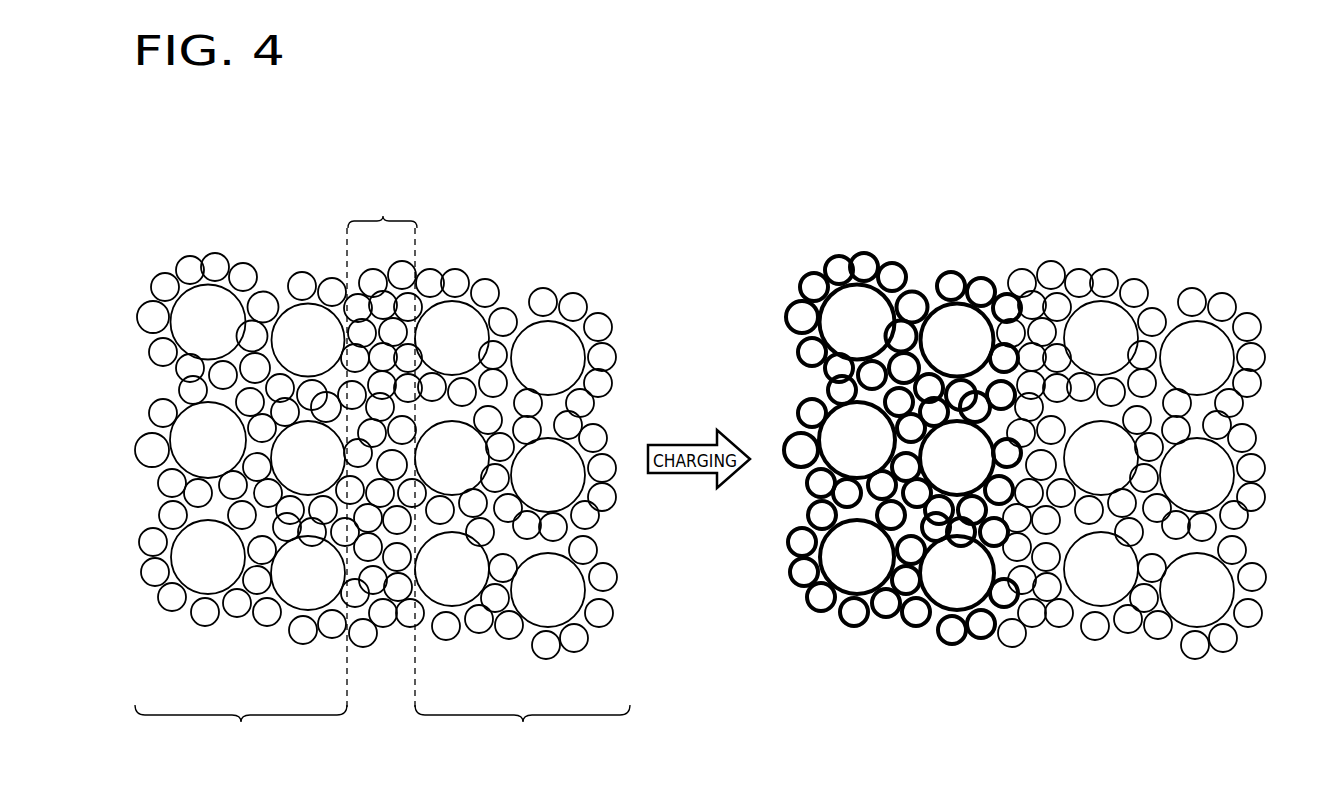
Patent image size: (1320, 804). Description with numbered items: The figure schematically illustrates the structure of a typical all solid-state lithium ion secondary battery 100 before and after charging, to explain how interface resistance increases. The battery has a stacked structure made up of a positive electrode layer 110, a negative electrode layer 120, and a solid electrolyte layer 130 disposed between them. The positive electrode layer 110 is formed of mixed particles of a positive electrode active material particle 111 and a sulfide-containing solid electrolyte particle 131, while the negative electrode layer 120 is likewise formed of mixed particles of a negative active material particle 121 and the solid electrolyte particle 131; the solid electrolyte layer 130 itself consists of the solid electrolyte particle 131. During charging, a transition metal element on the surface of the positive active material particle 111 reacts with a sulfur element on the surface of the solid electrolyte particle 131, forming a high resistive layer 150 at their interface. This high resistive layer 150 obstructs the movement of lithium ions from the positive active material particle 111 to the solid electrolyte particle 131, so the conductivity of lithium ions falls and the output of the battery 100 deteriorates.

The lithium ion secondary battery 100 is at (711, 471).
The positive electrode layer 110 is at (241, 508).
The positive electrode active material particle 111 is at (285, 301).
The negative electrode layer 120 is at (522, 511).
The negative active material particle 121 is at (528, 628).
The solid electrolyte layer 130 is at (378, 447).
The sulfide-containing solid electrolyte particle 131 is at (303, 281).
The high resistive layer 150 is at (843, 254).